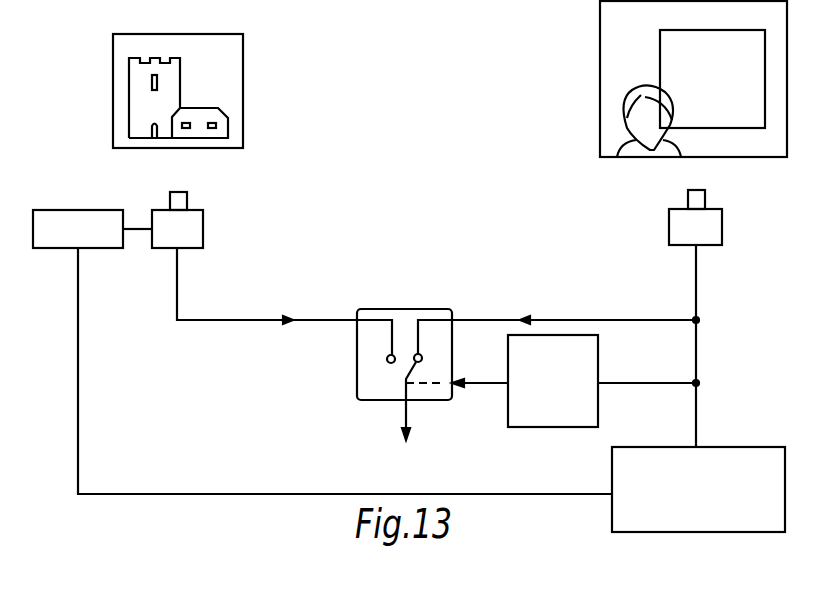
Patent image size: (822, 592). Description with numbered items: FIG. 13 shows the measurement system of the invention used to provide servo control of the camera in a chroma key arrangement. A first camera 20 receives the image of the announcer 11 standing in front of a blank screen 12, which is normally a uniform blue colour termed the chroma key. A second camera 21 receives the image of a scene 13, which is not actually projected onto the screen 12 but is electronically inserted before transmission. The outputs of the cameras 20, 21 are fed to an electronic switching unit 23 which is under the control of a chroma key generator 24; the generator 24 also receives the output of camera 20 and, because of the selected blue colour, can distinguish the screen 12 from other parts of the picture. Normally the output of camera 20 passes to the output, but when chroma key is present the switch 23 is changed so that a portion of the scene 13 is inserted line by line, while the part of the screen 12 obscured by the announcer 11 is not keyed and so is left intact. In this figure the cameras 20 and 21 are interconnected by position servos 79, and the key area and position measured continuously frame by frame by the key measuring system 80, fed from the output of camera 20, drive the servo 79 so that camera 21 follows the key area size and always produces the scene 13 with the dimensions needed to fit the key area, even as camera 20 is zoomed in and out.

The announcer 11 is at (632, 152).
The screen 12 is at (750, 122).
The scene 13 is at (243, 73).
The first camera 20 is at (722, 224).
The second camera 21 is at (203, 233).
The electronic switching unit 23 is at (403, 342).
The chroma key generator 24 is at (553, 428).
The position servos 79 is at (80, 209).
The key measuring system 80 is at (737, 447).